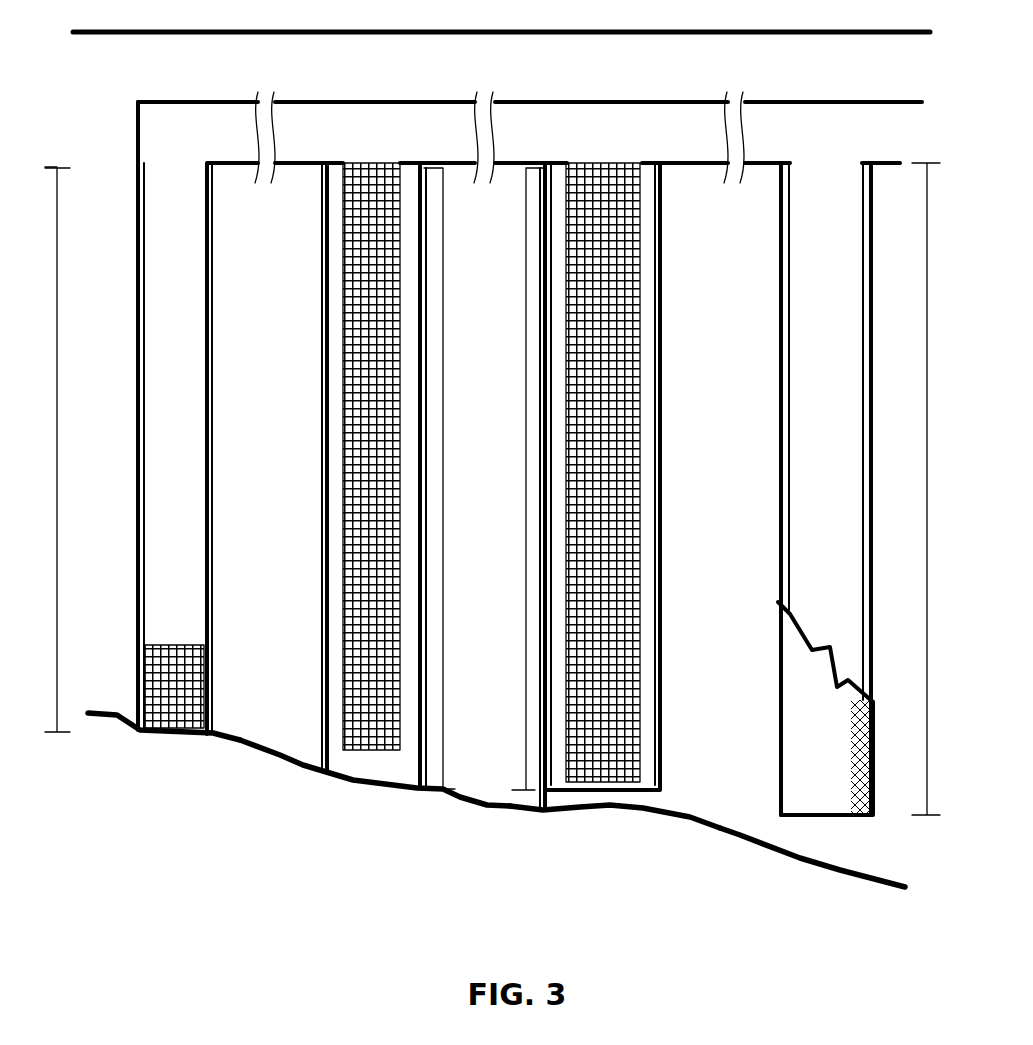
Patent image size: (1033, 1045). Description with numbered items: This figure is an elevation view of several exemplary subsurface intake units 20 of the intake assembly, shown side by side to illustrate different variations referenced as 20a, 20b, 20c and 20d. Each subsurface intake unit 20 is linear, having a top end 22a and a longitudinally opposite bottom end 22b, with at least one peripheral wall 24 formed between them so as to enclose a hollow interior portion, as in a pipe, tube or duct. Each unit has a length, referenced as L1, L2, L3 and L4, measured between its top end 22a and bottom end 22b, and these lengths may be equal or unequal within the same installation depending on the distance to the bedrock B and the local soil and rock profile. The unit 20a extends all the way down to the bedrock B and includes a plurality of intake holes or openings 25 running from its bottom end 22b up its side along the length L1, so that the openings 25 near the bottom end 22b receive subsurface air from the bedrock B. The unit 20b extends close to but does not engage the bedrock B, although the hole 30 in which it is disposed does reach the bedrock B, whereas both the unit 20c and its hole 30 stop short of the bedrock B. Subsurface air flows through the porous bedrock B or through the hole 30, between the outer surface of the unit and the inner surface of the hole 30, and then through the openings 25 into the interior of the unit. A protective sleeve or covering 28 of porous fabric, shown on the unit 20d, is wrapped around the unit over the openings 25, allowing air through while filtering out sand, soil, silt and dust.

The subsurface intake unit 20 is at (173, 387).
The subsurface intake unit 20a is at (170, 766).
The subsurface intake unit 20b is at (370, 809).
The subsurface intake unit 20c is at (603, 821).
The subsurface intake unit 20d is at (830, 839).
The top end 22a is at (137, 167).
The bottom end 22b is at (212, 720).
The peripheral wall 24 is at (143, 280).
The openings 25 is at (190, 680).
The protective sleeve 28 is at (797, 738).
The hole 30 is at (137, 219).
The length L1 is at (69, 450).
The length L2 is at (451, 478).
The length L3 is at (517, 479).
The length L4 is at (936, 489).
The bedrock B is at (74, 460).